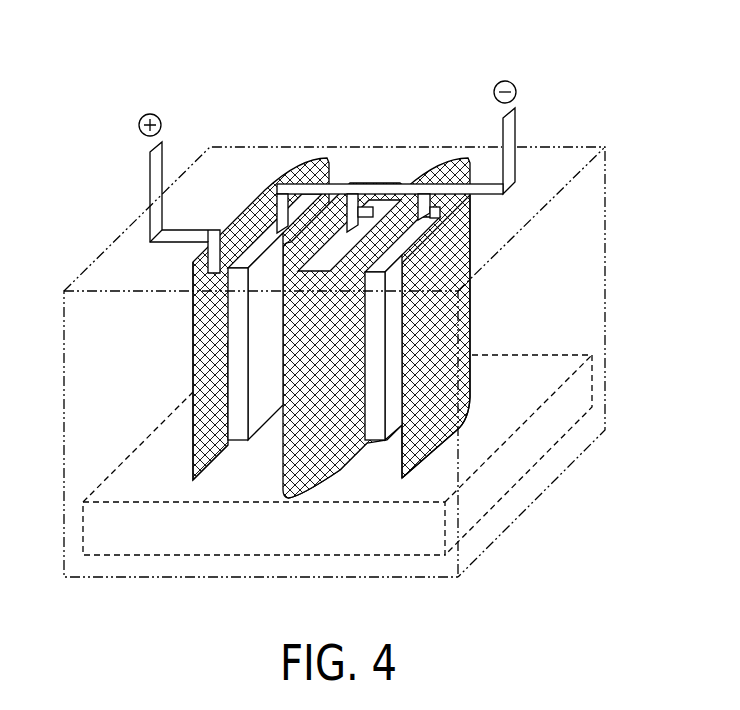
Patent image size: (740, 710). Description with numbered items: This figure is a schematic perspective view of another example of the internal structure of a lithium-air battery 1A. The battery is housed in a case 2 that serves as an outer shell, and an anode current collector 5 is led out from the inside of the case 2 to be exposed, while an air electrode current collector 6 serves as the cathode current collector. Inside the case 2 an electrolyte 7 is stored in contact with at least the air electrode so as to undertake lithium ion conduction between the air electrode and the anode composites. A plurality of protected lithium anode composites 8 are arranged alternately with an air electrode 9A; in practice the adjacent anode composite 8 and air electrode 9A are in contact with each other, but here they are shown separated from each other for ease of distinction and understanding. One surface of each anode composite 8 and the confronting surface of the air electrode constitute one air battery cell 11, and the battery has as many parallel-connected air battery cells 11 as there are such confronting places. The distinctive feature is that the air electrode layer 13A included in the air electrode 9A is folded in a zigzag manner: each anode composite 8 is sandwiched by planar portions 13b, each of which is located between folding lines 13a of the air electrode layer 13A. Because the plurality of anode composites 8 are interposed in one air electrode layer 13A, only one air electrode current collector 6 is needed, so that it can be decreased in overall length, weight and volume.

The lithium-air battery 1A is at (592, 90).
The case 2 is at (606, 284).
The anode current collector 5 is at (517, 127).
The air electrode current collector 6 is at (150, 174).
The electrolyte 7 is at (82, 537).
The protected lithium anode composite 8 is at (369, 208).
The air electrode 9A is at (474, 303).
The air battery cell 11 is at (265, 333).
The folding line 13a is at (330, 158).
The planar portion 13b is at (243, 207).
The air electrode layer 13A is at (263, 190).